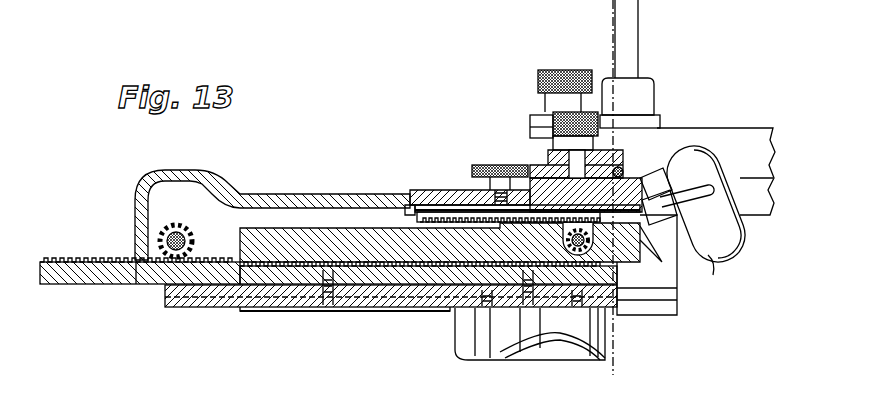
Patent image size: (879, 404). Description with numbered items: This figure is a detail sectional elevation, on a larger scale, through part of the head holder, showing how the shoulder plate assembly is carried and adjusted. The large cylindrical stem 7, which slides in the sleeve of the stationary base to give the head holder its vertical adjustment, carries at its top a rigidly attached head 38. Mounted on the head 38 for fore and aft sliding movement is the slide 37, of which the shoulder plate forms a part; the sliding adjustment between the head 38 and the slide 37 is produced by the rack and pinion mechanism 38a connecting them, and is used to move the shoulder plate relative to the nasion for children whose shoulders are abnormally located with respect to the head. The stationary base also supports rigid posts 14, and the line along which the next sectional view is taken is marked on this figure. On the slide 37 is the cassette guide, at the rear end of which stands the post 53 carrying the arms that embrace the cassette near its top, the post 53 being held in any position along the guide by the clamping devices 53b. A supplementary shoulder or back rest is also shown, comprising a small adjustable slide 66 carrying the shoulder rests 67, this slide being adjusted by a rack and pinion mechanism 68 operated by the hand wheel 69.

The cylindrical stem 7 is at (485, 330).
The rigid posts 14 is at (597, 380).
The slide 37 is at (372, 201).
The head 38 is at (210, 303).
The rack and pinion mechanism 38a is at (172, 262).
The post 53 is at (632, 30).
The clamping devices 53b is at (556, 72).
The adjustable slide 66 is at (447, 205).
The shoulder rests 67 is at (722, 254).
The rack and pinion mechanism 68 is at (582, 236).
The hand wheel 69 is at (404, 0).